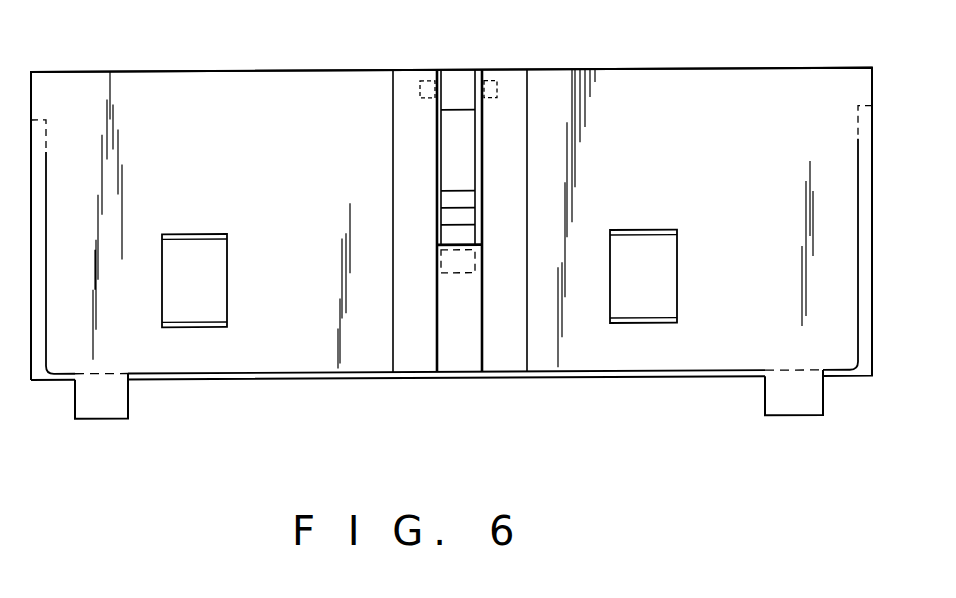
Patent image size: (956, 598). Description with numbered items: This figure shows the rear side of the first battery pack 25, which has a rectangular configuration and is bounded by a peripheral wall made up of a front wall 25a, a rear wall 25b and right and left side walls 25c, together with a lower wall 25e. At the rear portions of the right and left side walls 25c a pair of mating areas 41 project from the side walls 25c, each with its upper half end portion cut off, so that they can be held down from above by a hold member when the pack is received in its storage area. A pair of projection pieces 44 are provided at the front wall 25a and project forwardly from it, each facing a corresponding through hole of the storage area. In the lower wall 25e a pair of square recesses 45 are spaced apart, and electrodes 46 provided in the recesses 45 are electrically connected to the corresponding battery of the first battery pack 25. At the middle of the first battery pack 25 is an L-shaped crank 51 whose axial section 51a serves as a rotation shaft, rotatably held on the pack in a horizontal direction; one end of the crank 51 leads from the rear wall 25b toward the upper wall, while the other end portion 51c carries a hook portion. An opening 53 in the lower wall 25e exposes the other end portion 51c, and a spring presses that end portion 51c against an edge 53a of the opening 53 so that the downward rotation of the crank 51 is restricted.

The first battery pack 25 is at (323, 98).
The front wall 25a is at (258, 382).
The rear wall 25b is at (233, 72).
The side walls 25c is at (32, 332).
The lower wall 25e is at (373, 364).
The mating areas 41 is at (46, 140).
The projection pieces 44 is at (128, 397).
The square recesses 45 is at (193, 234).
The electrodes 46 is at (221, 310).
The crank 51 is at (441, 135).
The axial section 51a is at (458, 88).
The other end portion 51c is at (441, 161).
The opening 53 is at (478, 144).
The edge 53a is at (459, 260).